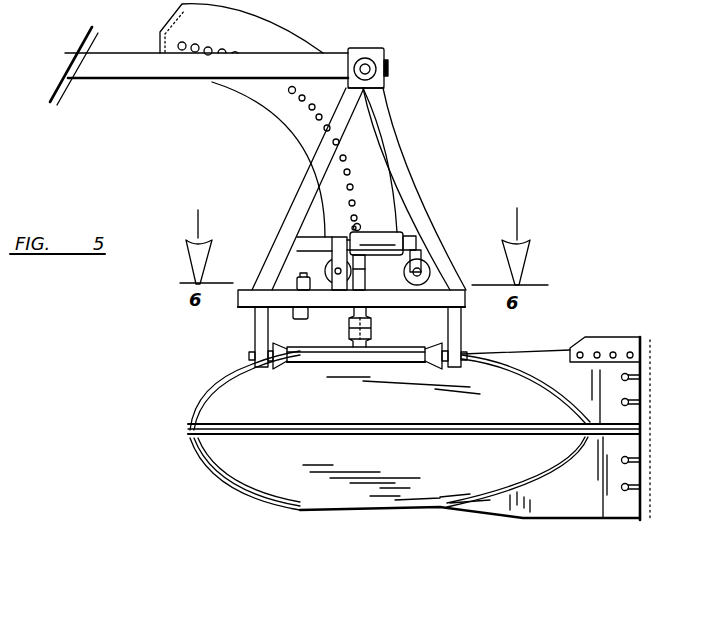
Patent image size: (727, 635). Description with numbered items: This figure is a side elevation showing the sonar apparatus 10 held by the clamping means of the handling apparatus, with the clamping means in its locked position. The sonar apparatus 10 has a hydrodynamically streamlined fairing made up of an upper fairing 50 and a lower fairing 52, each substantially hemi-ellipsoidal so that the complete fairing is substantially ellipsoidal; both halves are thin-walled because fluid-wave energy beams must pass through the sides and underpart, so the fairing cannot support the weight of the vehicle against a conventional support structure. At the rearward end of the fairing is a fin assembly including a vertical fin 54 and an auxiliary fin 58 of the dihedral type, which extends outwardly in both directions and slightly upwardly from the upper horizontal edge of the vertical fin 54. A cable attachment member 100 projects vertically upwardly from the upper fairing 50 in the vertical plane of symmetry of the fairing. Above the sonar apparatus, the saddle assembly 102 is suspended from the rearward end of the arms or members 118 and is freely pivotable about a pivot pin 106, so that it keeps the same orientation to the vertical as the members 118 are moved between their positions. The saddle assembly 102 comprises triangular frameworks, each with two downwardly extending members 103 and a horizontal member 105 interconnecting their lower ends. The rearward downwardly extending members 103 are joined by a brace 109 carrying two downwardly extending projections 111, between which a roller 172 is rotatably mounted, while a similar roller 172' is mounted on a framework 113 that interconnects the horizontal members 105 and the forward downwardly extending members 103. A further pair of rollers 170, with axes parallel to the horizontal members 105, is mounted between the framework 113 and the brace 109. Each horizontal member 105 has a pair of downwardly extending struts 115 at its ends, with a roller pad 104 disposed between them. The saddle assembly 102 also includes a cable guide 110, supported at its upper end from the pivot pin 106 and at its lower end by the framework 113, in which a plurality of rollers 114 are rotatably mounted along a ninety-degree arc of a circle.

The sonar apparatus 10 is at (250, 497).
The upper fairing 50 is at (210, 404).
The lower fairing 52 is at (353, 506).
The vertical fin 54 is at (642, 476).
The auxiliary fin 58 is at (641, 340).
The cable attachment member 100 is at (368, 320).
The saddle assembly 102 is at (446, 116).
The downwardly extending members 103 is at (403, 165).
The roller pad 104 is at (333, 353).
The horizontal member 105 is at (441, 294).
The pivot pin 106 is at (372, 48).
The brace 109 is at (383, 239).
The cable guide 110 is at (271, 35).
The downwardly extending projections 111 is at (421, 251).
The framework 113 is at (313, 242).
The rollers 114 is at (290, 92).
The struts 115 is at (462, 334).
The members 118 is at (140, 72).
The rollers 170 is at (391, 226).
The roller 172 is at (449, 264).
The roller 172' is at (286, 263).